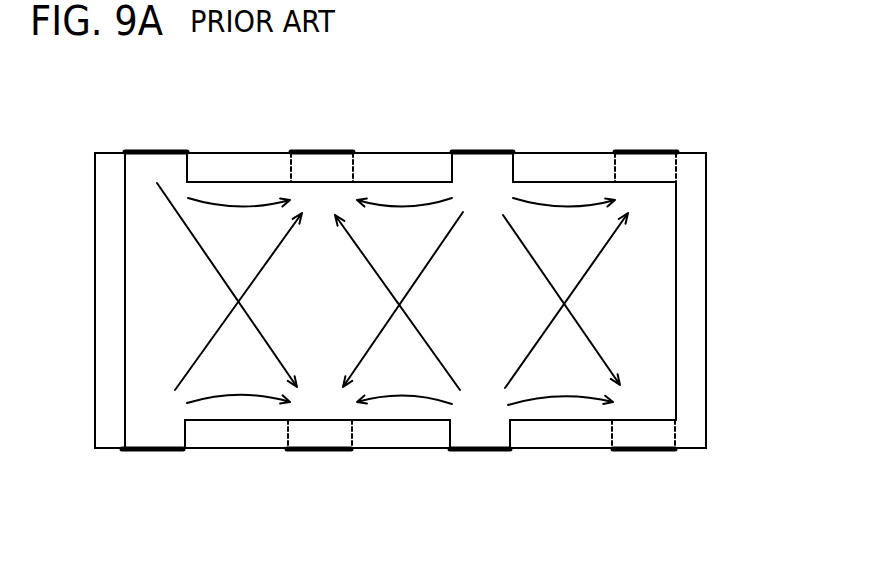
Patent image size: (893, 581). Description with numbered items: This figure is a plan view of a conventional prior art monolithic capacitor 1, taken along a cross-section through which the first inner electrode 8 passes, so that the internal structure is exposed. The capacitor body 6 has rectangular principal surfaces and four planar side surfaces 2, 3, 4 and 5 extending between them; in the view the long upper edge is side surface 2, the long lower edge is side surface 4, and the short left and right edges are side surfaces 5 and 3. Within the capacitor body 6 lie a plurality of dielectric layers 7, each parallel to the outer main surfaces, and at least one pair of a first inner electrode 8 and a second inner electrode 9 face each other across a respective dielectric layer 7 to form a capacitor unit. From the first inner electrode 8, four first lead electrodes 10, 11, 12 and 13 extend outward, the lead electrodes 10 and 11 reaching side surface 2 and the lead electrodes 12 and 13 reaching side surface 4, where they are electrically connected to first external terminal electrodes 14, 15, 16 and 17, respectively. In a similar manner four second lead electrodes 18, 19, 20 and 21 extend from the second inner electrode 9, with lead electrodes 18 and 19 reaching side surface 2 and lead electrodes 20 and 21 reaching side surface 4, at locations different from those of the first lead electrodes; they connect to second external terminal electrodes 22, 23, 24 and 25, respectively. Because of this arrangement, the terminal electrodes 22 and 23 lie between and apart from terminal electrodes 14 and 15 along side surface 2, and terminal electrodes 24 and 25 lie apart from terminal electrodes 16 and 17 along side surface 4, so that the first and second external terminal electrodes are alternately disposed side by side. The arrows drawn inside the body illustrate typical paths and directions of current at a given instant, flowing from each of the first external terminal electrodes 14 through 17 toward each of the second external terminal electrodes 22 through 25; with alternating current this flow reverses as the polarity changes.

The monolithic capacitor 1 is at (70, 116).
The side surface 2 is at (402, 152).
The side surface 3 is at (705, 297).
The side surface 4 is at (388, 452).
The side surface 5 is at (95, 278).
The capacitor body 6 is at (705, 152).
The dielectric layer 7 is at (105, 342).
The first inner electrode 8 is at (678, 232).
The second inner electrode 9 is at (680, 168).
The first lead electrode 10 is at (140, 160).
The first lead electrode 11 is at (472, 160).
The first lead electrode 12 is at (143, 445).
The first lead electrode 13 is at (472, 445).
The first external terminal electrode 14 is at (165, 148).
The first external terminal electrode 15 is at (502, 148).
The first external terminal electrode 16 is at (167, 455).
The first external terminal electrode 17 is at (490, 455).
The second lead electrode 18 is at (290, 167).
The second lead electrode 19 is at (615, 167).
The second lead electrode 20 is at (288, 437).
The second lead electrode 21 is at (676, 425).
The second external terminal electrode 22 is at (315, 150).
The second external terminal electrode 23 is at (645, 148).
The second external terminal electrode 24 is at (323, 457).
The second external terminal electrode 25 is at (640, 455).